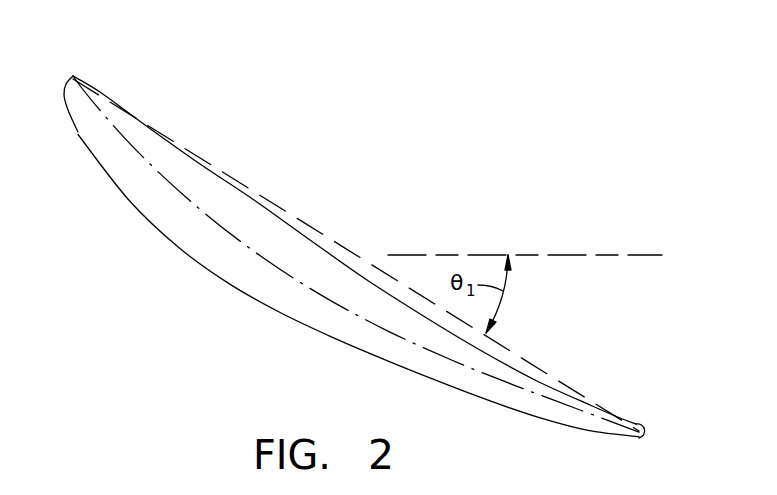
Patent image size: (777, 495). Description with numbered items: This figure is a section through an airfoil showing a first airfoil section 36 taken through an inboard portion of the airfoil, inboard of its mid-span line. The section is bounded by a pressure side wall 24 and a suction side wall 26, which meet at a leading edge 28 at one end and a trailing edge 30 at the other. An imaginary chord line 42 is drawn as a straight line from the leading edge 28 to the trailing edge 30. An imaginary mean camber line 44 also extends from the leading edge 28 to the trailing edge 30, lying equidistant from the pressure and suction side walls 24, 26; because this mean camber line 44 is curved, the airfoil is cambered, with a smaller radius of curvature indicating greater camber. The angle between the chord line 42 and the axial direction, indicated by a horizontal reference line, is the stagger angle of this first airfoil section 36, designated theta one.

The pressure side wall 24 is at (254, 200).
The suction side wall 26 is at (247, 293).
The leading edge 28 is at (73, 76).
The trailing edge 30 is at (645, 437).
The first airfoil section 36 is at (147, 280).
The chord line 42 is at (525, 362).
The mean camber line 44 is at (458, 362).